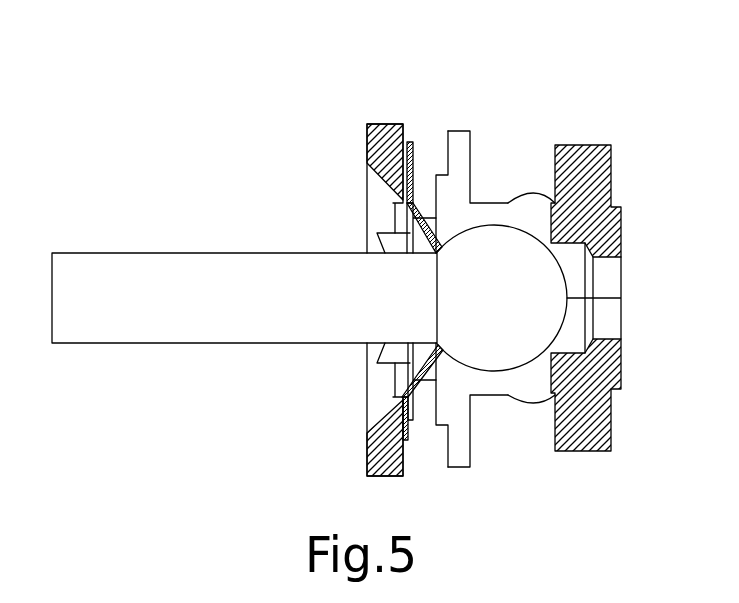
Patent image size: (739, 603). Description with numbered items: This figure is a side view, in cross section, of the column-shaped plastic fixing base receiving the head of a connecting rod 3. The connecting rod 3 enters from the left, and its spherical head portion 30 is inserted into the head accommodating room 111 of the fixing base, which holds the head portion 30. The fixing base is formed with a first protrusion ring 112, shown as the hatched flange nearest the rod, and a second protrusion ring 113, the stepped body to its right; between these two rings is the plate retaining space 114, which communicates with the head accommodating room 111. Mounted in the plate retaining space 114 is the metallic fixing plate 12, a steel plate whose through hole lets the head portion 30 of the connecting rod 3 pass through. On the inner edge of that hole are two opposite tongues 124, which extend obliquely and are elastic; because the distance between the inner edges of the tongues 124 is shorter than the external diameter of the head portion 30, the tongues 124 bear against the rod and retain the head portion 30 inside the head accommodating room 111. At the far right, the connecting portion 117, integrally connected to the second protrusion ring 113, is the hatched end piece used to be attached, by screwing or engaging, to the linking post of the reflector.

The connecting rod 3 is at (77, 252).
The fixing plate 12 is at (411, 140).
The head portion 30 is at (499, 358).
The head accommodating room 111 is at (520, 200).
The first protrusion ring 112 is at (367, 135).
The second protrusion ring 113 is at (467, 133).
The plate retaining space 114 is at (441, 123).
The connecting portion 117 is at (588, 145).
The tongues 124 is at (397, 227).